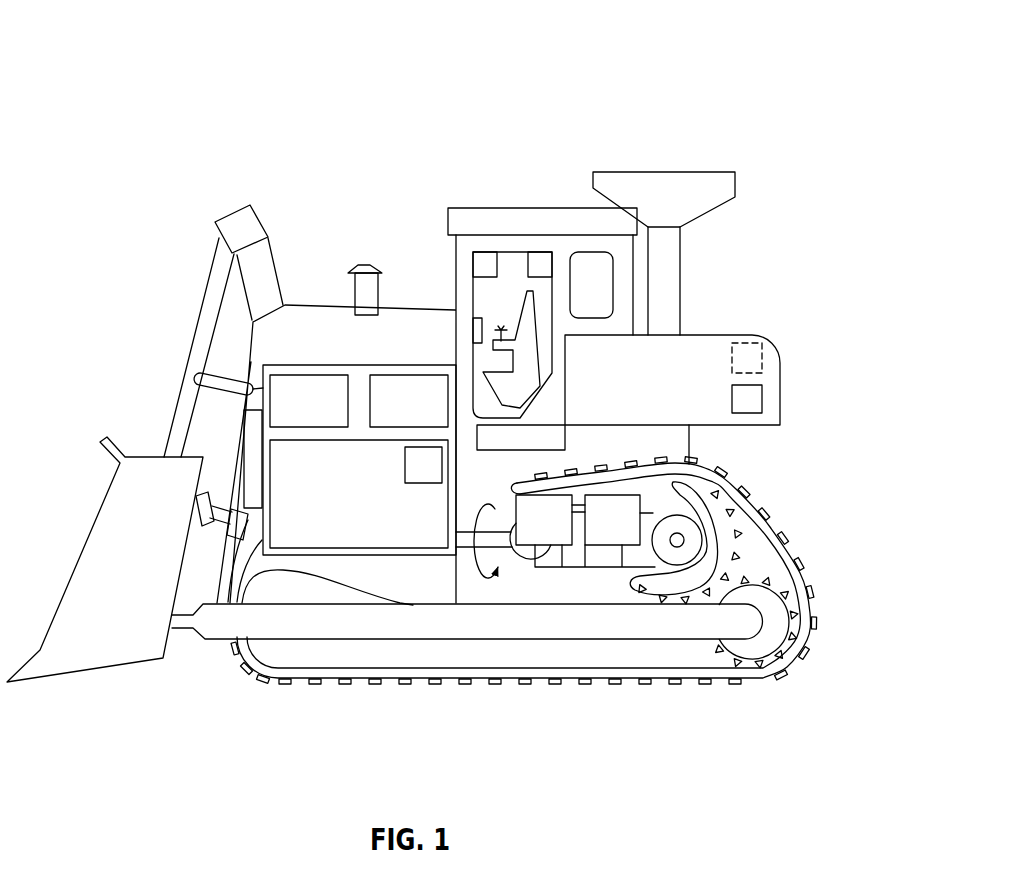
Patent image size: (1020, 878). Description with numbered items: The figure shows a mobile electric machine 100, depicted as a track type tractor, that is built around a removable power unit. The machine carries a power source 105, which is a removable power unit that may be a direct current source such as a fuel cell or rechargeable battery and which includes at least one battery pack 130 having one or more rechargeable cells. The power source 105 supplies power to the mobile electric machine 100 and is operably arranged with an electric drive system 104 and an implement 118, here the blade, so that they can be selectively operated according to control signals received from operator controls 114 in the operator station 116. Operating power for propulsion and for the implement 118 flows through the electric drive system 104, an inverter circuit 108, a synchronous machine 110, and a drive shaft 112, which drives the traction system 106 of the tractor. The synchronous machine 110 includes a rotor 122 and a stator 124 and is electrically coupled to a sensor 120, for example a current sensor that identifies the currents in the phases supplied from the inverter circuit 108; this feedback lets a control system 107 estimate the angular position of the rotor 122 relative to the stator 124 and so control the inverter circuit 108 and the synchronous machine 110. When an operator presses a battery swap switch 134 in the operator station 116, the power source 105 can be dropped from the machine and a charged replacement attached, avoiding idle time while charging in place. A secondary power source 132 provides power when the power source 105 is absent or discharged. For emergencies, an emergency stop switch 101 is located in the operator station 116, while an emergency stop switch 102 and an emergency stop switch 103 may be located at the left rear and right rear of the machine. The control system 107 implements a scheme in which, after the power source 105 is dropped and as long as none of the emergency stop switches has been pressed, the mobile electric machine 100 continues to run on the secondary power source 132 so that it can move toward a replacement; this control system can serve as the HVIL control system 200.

The mobile electric machine 100 is at (146, 61).
The emergency stop switch 101 is at (546, 262).
The emergency stop switch 102 is at (762, 398).
The emergency stop switch 103 is at (762, 362).
The electric drive system 104 is at (600, 580).
The power source 105 is at (264, 471).
The traction system 106 is at (758, 523).
The control system 107 is at (423, 446).
The inverter circuit 108 is at (246, 445).
The synchronous machine 110 is at (531, 558).
The drive shaft 112 is at (468, 548).
The operator controls 114 is at (468, 332).
The operator station 116 is at (519, 248).
The implement 118 is at (96, 506).
The sensor 120 is at (566, 533).
The rotor 122 is at (612, 635).
The stator 124 is at (544, 649).
The battery pack 130 is at (416, 367).
The secondary power source 132 is at (252, 388).
The battery swap switch 134 is at (488, 258).
The HVIL control system 200 is at (634, 533).